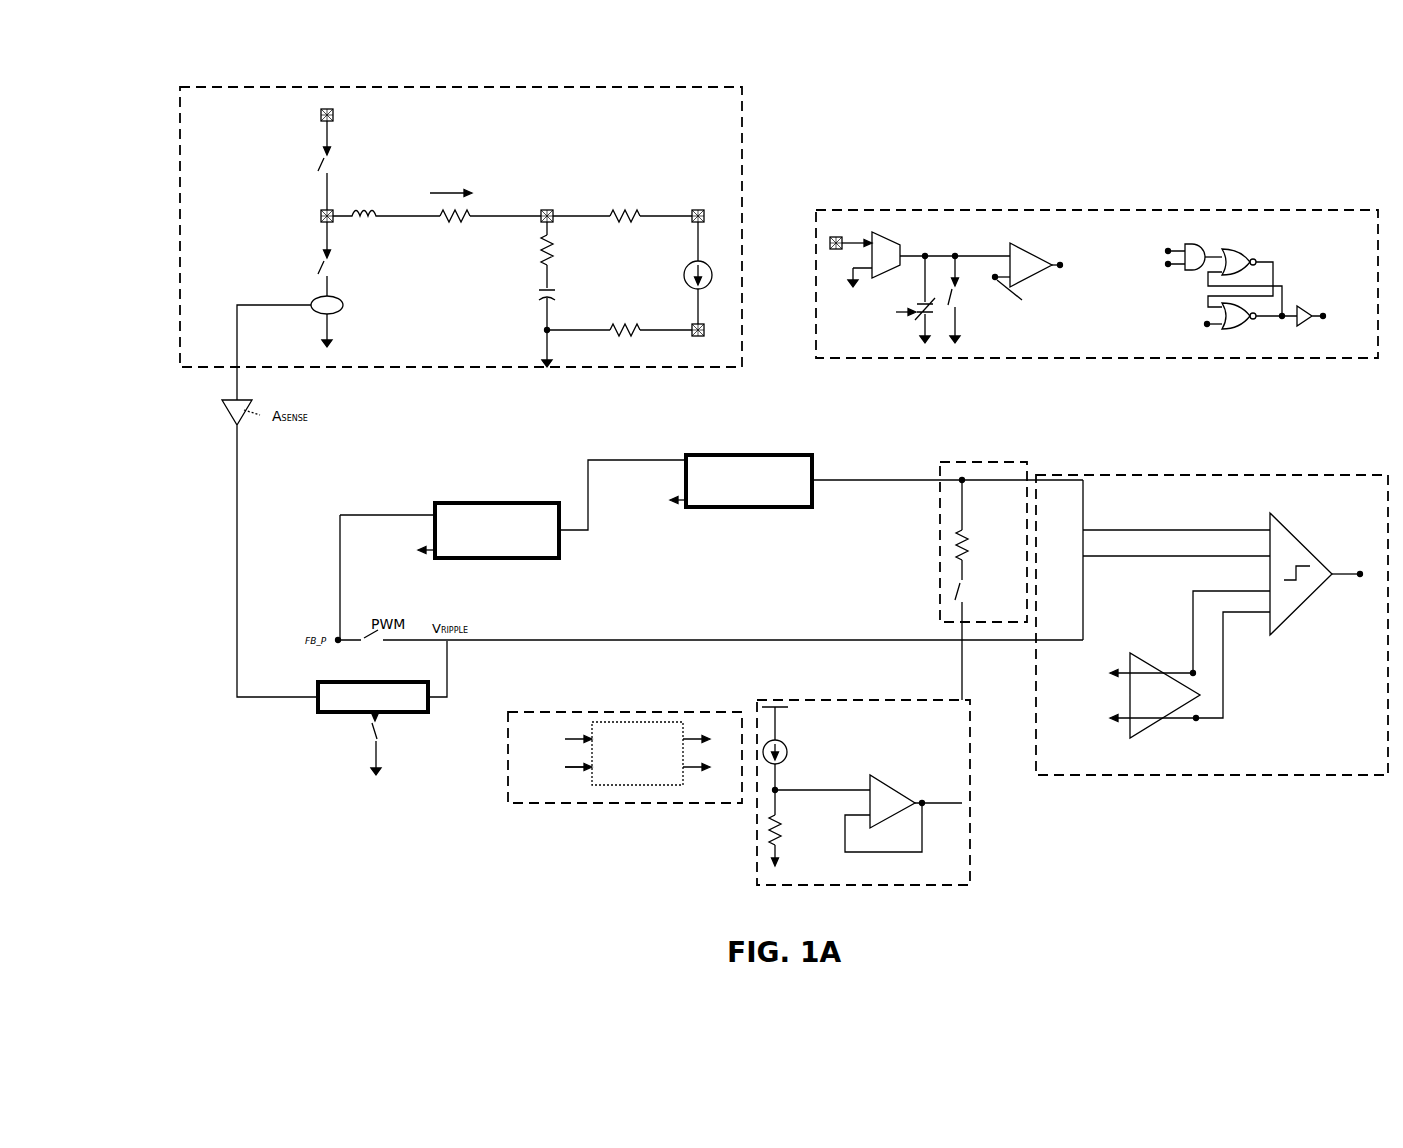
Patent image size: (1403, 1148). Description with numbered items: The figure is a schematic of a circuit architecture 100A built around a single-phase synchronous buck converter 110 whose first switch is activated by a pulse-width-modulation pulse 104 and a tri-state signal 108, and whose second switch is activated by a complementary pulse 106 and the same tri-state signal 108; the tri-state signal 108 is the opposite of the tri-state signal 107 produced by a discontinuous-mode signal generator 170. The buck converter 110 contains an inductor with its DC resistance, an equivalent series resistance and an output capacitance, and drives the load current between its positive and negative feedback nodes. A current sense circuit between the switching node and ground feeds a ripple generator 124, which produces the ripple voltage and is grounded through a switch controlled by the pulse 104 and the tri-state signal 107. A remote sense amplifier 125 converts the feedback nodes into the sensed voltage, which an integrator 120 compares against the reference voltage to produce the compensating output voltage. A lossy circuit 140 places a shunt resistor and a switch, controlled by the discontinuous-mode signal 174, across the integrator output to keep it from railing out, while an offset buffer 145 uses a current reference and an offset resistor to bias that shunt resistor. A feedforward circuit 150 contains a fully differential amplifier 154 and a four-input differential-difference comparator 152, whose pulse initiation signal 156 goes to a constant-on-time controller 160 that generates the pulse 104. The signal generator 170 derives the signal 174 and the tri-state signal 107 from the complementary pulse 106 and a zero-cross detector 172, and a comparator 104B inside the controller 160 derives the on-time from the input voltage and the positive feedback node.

The circuit architecture 100A is at (1304, 104).
The buck converter 110 is at (741, 155).
The PWM pulse 104 is at (312, 163).
The tri-state signal (TRI_N signal) 108 is at (321, 164).
The PWM_N pulse 106 is at (312, 268).
The tri-state signal 107 is at (328, 744).
The integrator 120 is at (732, 453).
The ripple generator 124 is at (372, 681).
The remote sense amplifier 125 is at (485, 502).
The lossy circuit 140 is at (1003, 462).
The offset buffer 145 is at (972, 850).
The feedforward circuit 150 is at (1283, 475).
The DDA-based PWM comparator 152 is at (1290, 550).
The fully differential amplifier 154 is at (1135, 660).
The PWM pulse initiation signal 156 is at (1356, 562).
The constant-on-time (COT) controller 160 is at (1105, 210).
The DCM signal generator 170 is at (600, 712).
The zero-cross-detector (ZCD) 172 is at (556, 768).
The DCM signal 174 is at (974, 590).
The comparator 104B is at (1009, 276).